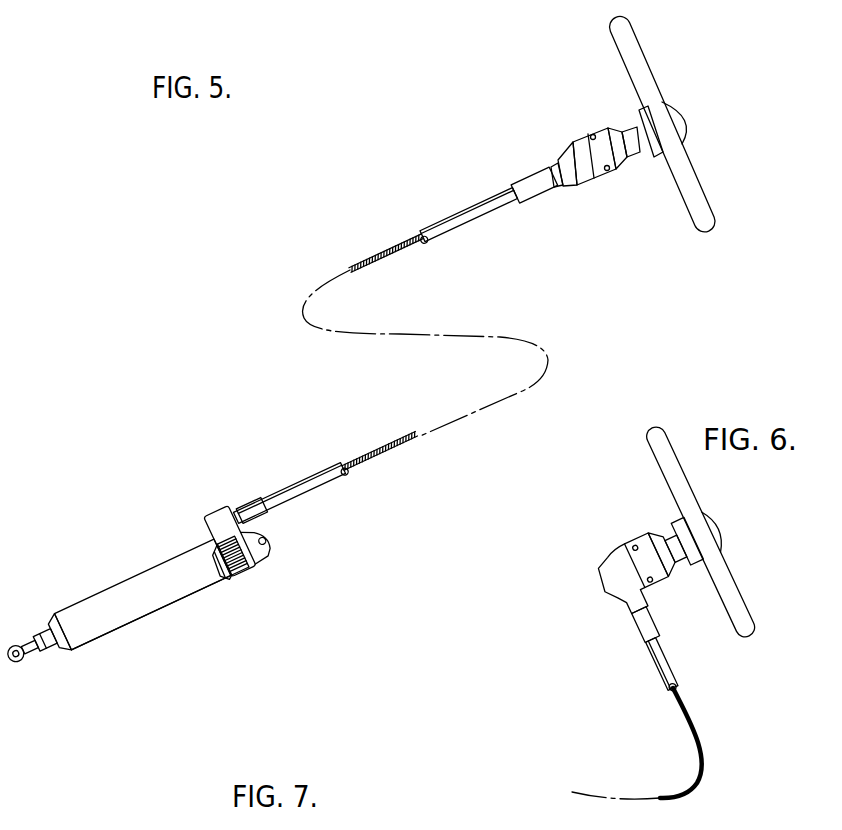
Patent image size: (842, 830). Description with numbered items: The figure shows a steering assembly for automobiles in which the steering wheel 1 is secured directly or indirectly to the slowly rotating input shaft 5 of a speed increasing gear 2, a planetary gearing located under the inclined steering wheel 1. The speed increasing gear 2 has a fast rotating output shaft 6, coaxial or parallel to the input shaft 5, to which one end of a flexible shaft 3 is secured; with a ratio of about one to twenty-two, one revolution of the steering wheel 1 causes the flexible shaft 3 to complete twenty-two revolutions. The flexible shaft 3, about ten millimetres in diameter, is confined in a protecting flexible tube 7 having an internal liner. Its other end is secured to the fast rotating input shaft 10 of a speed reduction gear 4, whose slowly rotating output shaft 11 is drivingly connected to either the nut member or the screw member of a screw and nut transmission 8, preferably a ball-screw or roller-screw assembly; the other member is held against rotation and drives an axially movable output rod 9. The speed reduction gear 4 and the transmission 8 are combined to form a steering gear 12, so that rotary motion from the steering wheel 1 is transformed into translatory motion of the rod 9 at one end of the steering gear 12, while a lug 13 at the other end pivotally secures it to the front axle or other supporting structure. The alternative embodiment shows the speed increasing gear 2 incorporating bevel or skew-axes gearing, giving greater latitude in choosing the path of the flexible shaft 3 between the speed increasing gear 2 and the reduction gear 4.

In FIG. 5, the steering wheel 1 is at (699, 186).
In FIG. 6, the steering wheel 1 is at (742, 590).
In FIG. 5, the speed increasing gear 2 is at (579, 142).
In FIG. 6, the speed increasing gear 2 is at (620, 548).
In FIG. 5, the flexible shaft 3 is at (366, 259).
In FIG. 6, the flexible shaft 3 is at (703, 763).
In FIG. 5, the speed reduction gear 4 is at (214, 517).
In FIG. 5, the input shaft 5 is at (647, 148).
In FIG. 6, the input shaft 5 is at (688, 554).
In FIG. 5, the output shaft 6 is at (530, 180).
In FIG. 6, the output shaft 6 is at (641, 626).
In FIG. 5, the protecting flexible tube 7 is at (461, 216).
In FIG. 6, the protecting flexible tube 7 is at (671, 673).
In FIG. 5, the screw and nut transmission 8 is at (134, 582).
In FIG. 5, the axially movable output rod 9 is at (32, 638).
In FIG. 5, the input shaft 10 is at (250, 505).
In FIG. 5, the output shaft 11 is at (218, 560).
In FIG. 5, the steering gear 12 is at (131, 625).
In FIG. 5, the lug 13 is at (268, 548).